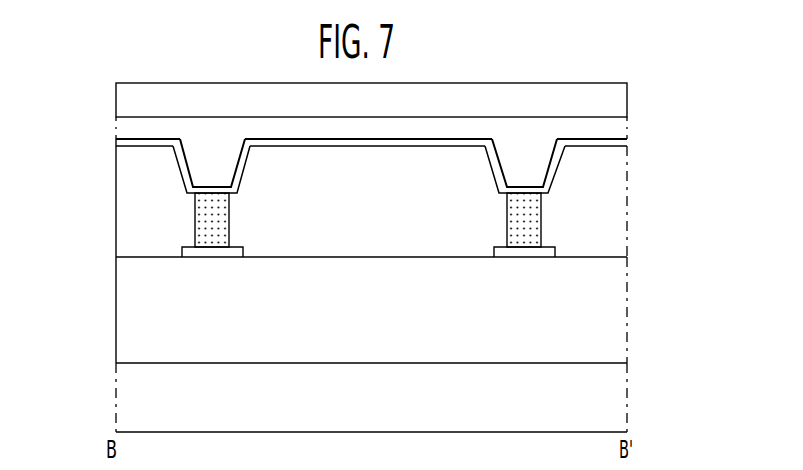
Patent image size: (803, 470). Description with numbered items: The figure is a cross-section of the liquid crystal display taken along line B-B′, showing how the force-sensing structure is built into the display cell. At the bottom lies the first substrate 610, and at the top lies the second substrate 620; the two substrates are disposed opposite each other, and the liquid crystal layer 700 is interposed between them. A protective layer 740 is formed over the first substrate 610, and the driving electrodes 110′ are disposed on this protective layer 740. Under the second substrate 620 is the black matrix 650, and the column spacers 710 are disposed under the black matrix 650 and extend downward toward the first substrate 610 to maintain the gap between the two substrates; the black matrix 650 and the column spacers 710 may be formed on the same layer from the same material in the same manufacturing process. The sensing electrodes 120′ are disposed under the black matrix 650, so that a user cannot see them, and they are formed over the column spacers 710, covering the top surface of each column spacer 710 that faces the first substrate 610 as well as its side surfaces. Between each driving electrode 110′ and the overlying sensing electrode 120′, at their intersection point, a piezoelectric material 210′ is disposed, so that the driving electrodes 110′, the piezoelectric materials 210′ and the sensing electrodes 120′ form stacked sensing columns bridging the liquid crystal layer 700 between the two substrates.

The second substrate 620 is at (617, 91).
The black matrix 650 is at (617, 118).
The sensing electrodes 120′ is at (617, 143).
The column spacers 710 is at (203, 168).
The piezoelectric materials 210′ is at (197, 219).
The driving electrodes 110′ is at (236, 253).
The liquid crystal layer 700 is at (617, 217).
The protective layer 740 is at (122, 310).
The first substrate 610 is at (617, 390).